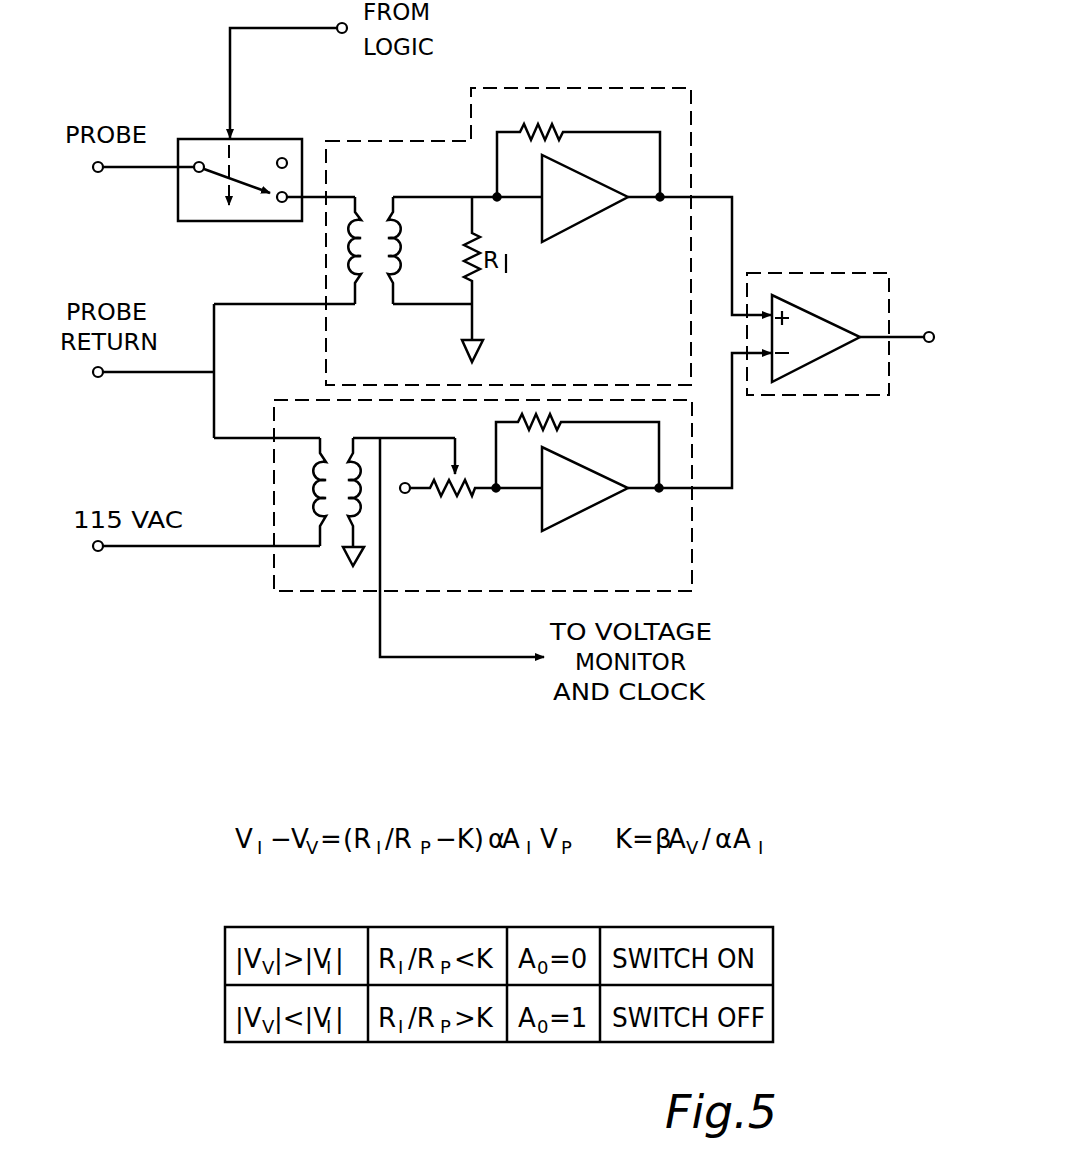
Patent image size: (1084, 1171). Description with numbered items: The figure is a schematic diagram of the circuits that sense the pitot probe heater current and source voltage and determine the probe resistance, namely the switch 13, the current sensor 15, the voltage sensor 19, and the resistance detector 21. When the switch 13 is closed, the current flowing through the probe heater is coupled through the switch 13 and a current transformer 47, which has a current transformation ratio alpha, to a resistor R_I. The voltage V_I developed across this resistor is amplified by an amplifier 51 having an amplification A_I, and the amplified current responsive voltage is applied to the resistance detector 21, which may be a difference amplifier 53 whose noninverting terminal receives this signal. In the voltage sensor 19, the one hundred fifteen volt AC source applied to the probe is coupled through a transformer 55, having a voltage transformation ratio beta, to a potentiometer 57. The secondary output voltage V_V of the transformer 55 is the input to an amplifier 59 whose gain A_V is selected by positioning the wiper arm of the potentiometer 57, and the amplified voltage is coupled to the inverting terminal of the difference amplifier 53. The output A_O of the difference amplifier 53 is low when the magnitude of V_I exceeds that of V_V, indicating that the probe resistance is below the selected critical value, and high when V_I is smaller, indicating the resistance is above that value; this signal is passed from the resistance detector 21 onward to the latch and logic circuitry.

The switch 13 is at (213, 139).
The current sensor 15 is at (691, 131).
The current transformer 47 is at (378, 292).
The amplifier 51 is at (582, 220).
The resistance detector 21 is at (820, 273).
The difference amplifier 53 is at (813, 362).
The voltage sensor 19 is at (692, 565).
The transformer 55 is at (336, 528).
The potentiometer 57 is at (468, 490).
The amplifier 59 is at (590, 508).